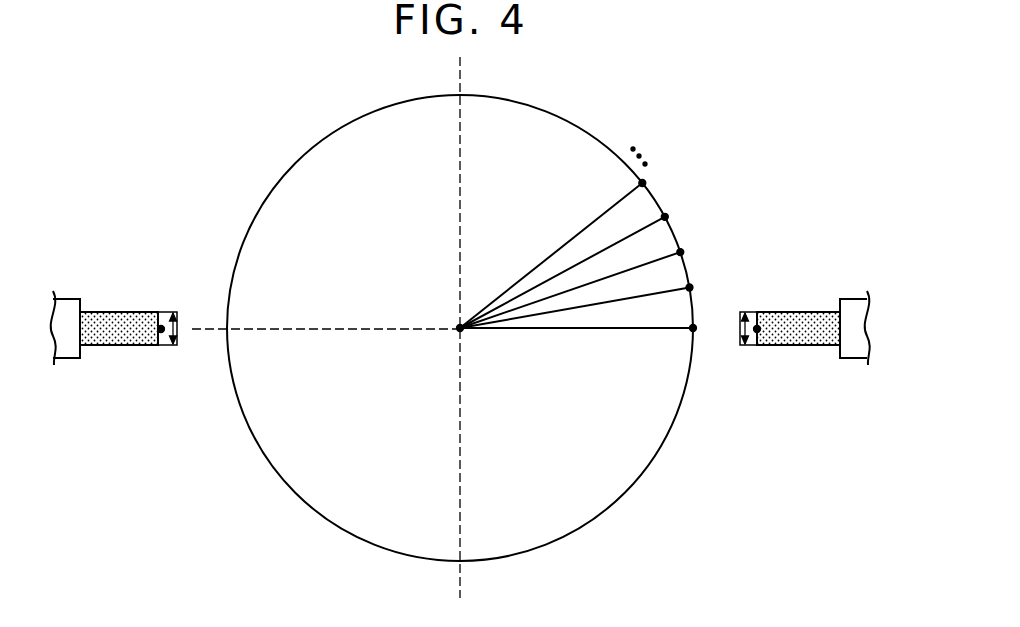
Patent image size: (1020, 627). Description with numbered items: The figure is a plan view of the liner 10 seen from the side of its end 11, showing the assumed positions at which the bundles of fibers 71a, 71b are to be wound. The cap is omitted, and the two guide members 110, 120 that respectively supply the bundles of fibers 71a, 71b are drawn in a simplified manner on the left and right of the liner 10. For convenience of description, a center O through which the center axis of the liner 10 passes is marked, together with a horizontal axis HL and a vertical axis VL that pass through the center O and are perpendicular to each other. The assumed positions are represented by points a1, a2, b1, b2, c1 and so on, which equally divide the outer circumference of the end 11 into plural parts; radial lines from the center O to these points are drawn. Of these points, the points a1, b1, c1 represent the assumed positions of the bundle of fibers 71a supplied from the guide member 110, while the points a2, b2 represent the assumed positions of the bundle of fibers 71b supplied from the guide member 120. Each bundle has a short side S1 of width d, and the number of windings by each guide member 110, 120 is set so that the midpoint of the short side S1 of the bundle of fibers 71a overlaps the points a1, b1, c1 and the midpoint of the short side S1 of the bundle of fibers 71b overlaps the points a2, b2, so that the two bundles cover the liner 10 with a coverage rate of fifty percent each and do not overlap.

The liner 10 is at (589, 110).
The end 11 is at (327, 175).
The bundle of fibers 71a is at (124, 312).
The bundle of fibers 71b is at (798, 312).
The guide member 110 is at (64, 299).
The guide member 120 is at (855, 299).
The short side S1 is at (159, 344).
The detection width d is at (181, 332).
The horizontal axis HL is at (324, 316).
The vertical axis VL is at (458, 342).
The center O is at (449, 316).
The point a1 is at (739, 329).
The point a2 is at (591, 301).
The point b1 is at (586, 283).
The point b2 is at (580, 265).
The point c1 is at (568, 237).